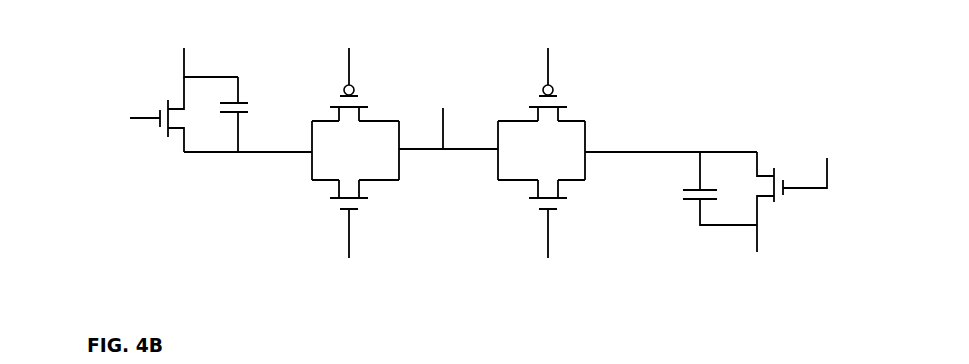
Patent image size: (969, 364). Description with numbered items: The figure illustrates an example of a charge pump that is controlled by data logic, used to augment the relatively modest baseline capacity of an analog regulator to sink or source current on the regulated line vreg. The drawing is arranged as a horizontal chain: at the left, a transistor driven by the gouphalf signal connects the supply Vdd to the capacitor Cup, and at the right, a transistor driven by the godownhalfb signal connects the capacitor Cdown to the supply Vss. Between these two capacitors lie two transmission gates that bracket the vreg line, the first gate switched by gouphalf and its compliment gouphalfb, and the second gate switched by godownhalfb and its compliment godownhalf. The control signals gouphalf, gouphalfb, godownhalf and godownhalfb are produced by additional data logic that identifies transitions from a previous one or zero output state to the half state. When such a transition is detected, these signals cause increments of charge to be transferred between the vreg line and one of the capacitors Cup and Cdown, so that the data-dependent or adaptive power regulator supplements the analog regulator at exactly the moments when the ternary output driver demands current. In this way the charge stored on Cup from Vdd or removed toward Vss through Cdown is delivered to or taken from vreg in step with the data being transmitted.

The positive supply voltage Vdd is at (198, 47).
The negative supply voltage / ground Vss is at (764, 255).
The capacitor Cup is at (256, 114).
The capacitor Cdown is at (682, 188).
The vreg line vreg is at (448, 112).
The gouphalf signal gouphalf is at (215, 86).
The gouphalf compliment signal gouphalfb is at (348, 244).
The godownhalf signal godownhalf is at (546, 243).
The godownhalf compliment signal godownhalfb is at (699, 108).